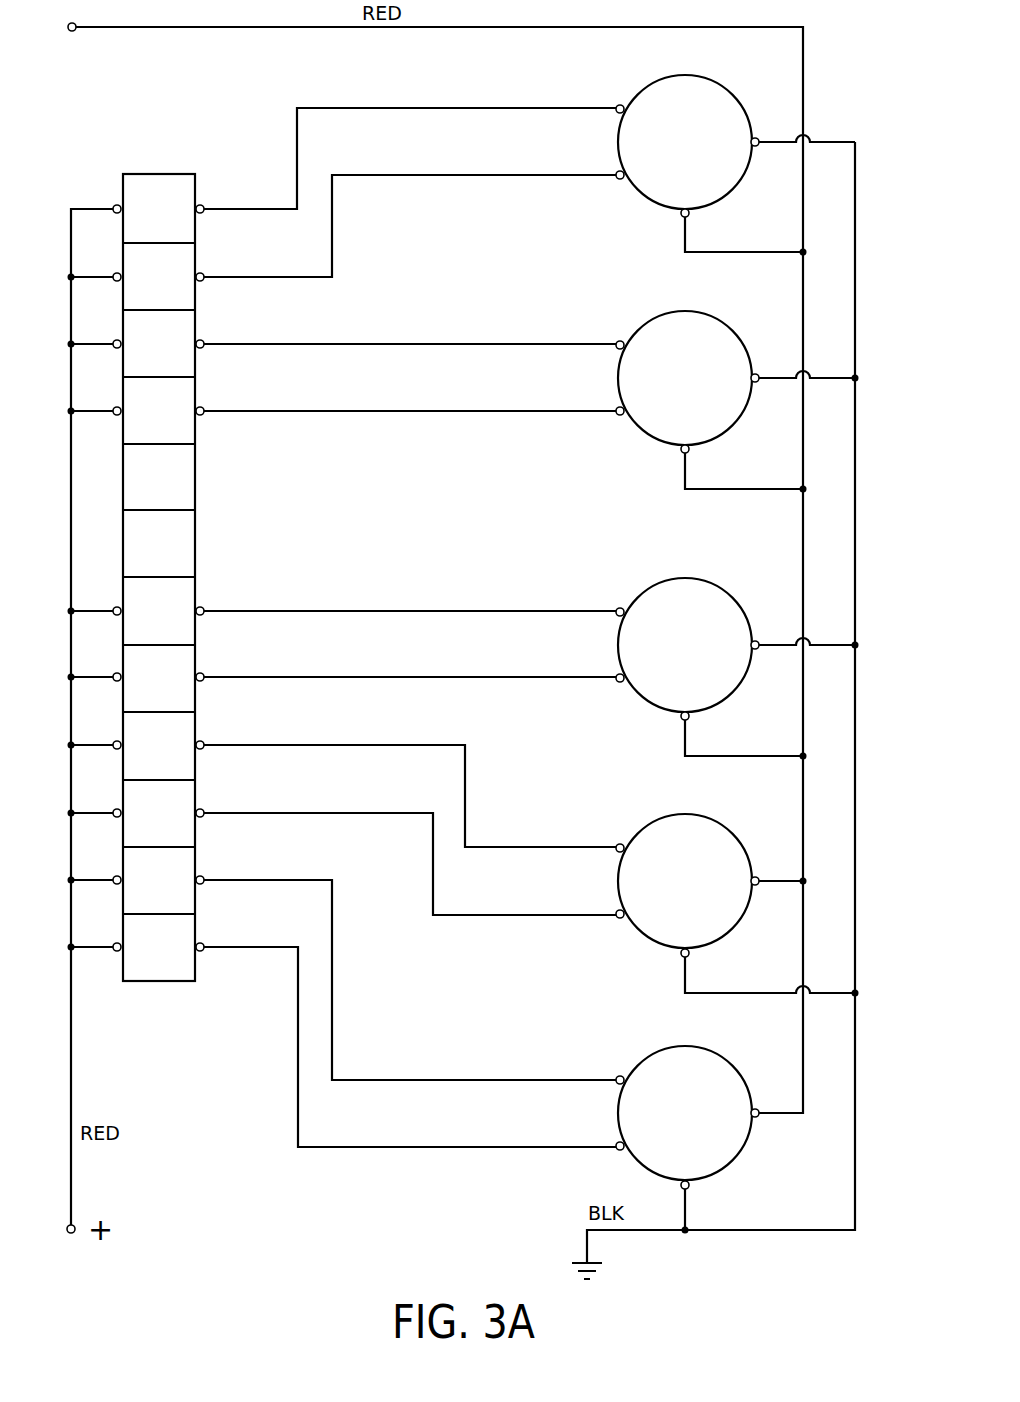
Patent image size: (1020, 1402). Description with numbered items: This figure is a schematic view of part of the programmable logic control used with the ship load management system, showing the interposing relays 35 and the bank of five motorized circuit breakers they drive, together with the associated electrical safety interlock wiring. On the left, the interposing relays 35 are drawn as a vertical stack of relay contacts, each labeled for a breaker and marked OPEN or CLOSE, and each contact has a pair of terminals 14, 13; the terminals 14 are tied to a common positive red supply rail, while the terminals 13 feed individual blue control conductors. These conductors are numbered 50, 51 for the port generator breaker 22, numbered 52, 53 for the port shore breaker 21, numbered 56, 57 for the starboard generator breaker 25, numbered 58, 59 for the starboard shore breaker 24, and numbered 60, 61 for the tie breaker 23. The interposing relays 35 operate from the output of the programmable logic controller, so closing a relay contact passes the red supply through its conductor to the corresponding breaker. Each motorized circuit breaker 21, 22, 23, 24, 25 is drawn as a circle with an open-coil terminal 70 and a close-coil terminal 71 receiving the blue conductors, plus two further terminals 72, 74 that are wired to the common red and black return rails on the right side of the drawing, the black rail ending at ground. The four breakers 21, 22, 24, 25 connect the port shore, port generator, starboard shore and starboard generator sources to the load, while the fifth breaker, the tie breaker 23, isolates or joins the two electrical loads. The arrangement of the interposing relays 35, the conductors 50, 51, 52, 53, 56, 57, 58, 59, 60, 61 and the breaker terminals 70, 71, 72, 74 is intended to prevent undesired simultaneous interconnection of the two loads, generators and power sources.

The interposing relays 35 is at (142, 166).
The port generator breaker 22 is at (650, 204).
The port shore breaker 21 is at (650, 440).
The starboard generator breaker 25 is at (652, 706).
The starboard shore breaker 24 is at (655, 943).
The tie breaker 23 is at (657, 1052).
The relay contact terminal 13 is at (187, 578).
The relay contact terminal 14 is at (131, 578).
The conductor to breaker D open coil 50 is at (410, 145).
The conductor to breaker D close coil 51 is at (410, 213).
The conductor to breaker C open coil 52 is at (410, 330).
The conductor to breaker C close coil 53 is at (410, 397).
The conductor to breaker A open coil 56 is at (410, 597).
The conductor to breaker A close coil 57 is at (410, 663).
The conductor to breaker B open coil 58 is at (410, 782).
The conductor to breaker B close coil 59 is at (410, 850).
The conductor to tie breaker open coil 60 is at (410, 966).
The conductor to tie breaker close coil 61 is at (410, 1033).
The breaker open coil terminal 70 is at (636, 597).
The breaker close coil terminal 71 is at (636, 658).
The breaker terminal 72 is at (715, 654).
The breaker terminal 74 is at (715, 659).